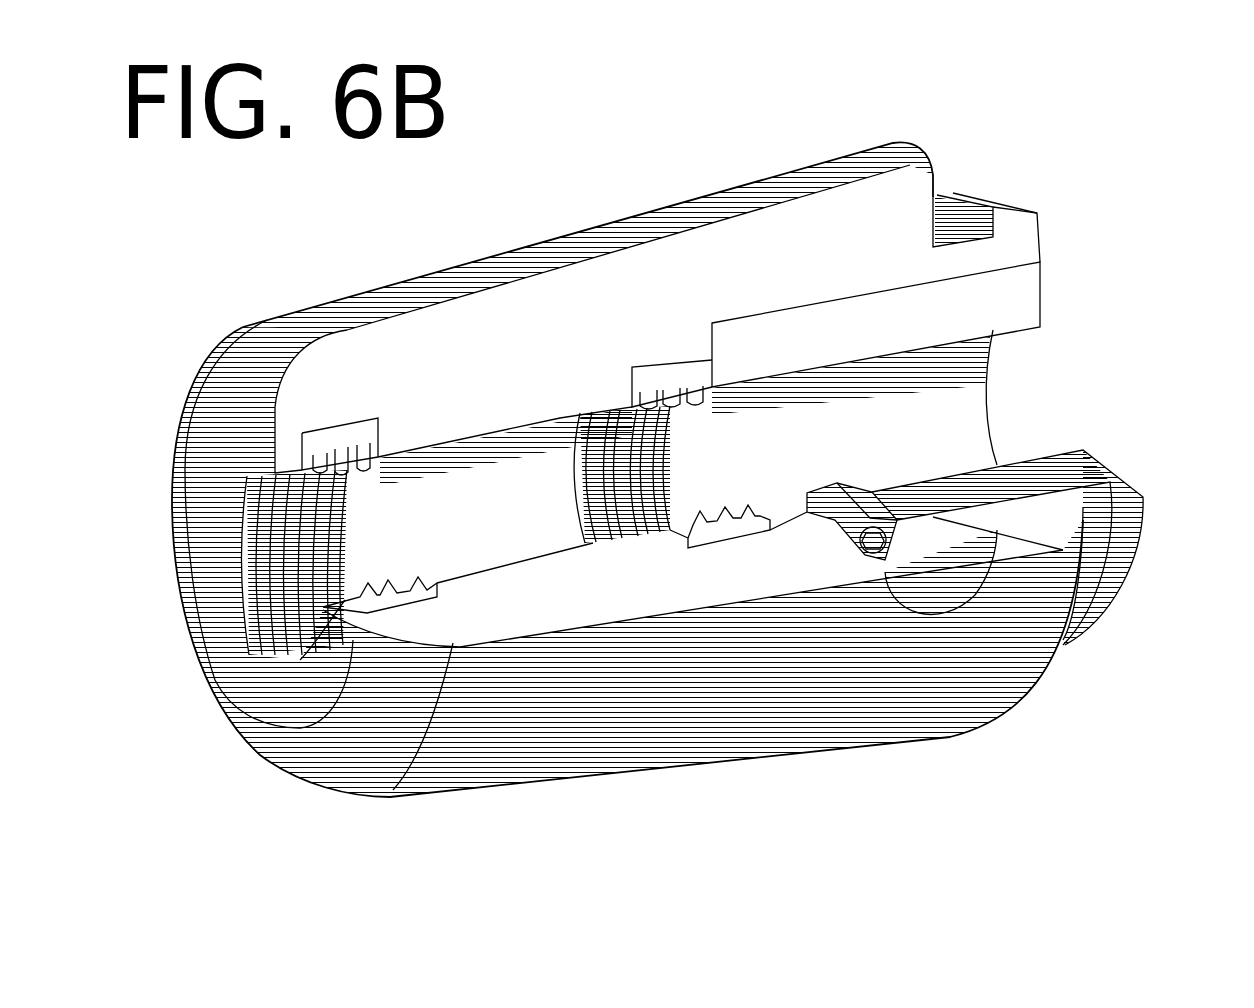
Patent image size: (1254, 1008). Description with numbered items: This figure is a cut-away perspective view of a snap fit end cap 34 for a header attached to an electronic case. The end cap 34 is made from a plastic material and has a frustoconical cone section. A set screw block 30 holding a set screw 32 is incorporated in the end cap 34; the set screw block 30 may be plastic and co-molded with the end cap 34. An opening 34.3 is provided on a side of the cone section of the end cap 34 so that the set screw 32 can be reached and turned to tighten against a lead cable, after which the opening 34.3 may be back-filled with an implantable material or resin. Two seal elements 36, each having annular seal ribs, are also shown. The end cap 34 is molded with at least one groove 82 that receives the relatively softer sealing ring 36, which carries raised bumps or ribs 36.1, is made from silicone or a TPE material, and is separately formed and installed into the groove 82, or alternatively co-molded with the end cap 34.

The set screw block 30 is at (1012, 288).
The set screw 32 is at (937, 575).
The snap fit end cap 34 is at (583, 226).
The opening 34.3 is at (903, 577).
The seal elements 36 is at (330, 450).
The raised bumps or ribs 36.1 is at (702, 515).
The groove 82 is at (378, 420).